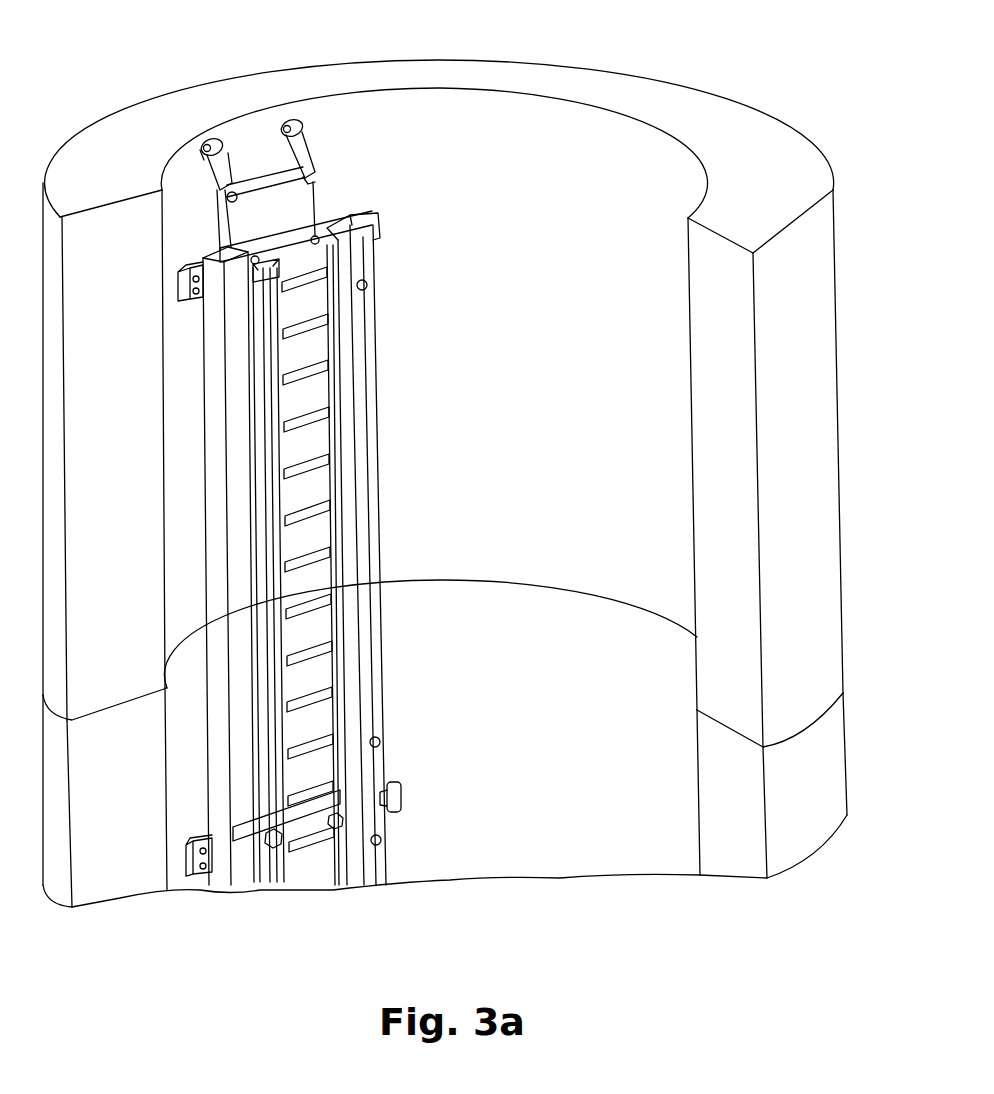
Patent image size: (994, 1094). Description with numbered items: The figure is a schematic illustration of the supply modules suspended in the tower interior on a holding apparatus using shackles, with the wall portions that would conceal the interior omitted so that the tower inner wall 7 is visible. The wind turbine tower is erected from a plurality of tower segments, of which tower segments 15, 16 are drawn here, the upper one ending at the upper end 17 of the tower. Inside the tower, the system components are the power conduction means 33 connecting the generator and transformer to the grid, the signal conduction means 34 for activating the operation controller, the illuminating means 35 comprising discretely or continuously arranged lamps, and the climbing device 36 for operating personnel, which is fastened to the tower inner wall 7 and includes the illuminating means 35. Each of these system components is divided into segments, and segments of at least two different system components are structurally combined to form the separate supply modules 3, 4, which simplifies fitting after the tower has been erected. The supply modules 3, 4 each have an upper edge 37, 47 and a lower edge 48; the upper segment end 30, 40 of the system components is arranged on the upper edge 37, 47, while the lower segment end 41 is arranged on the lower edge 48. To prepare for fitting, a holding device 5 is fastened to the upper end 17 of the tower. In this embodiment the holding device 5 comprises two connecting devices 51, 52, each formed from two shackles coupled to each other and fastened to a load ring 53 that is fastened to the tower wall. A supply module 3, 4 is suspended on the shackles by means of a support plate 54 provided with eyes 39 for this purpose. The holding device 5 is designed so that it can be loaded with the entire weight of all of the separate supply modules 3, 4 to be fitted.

The supply module 3 is at (278, 500).
The supply module 4 is at (290, 549).
The holding device 5 is at (239, 134).
The tower inner wall 7 is at (635, 722).
The tower segment 15 is at (583, 774).
The tower segment 16 is at (578, 364).
The upper end 17 is at (505, 123).
The upper segment end 30 is at (233, 830).
The power conduction means 33 is at (213, 355).
The signal conduction means 34 is at (374, 432).
The illuminating means 35 is at (372, 310).
The climbing device 36 is at (338, 355).
The upper edge 37 is at (195, 838).
The eye 39 is at (313, 225).
The upper segment end 40 is at (222, 253).
The lower segment end 41 is at (400, 807).
The upper edge 47 is at (318, 185).
The lower edge 48 is at (355, 797).
The connecting device 51 is at (203, 153).
The connecting device 52 is at (213, 188).
The load ring 53 is at (207, 140).
The support plate 54 is at (233, 217).